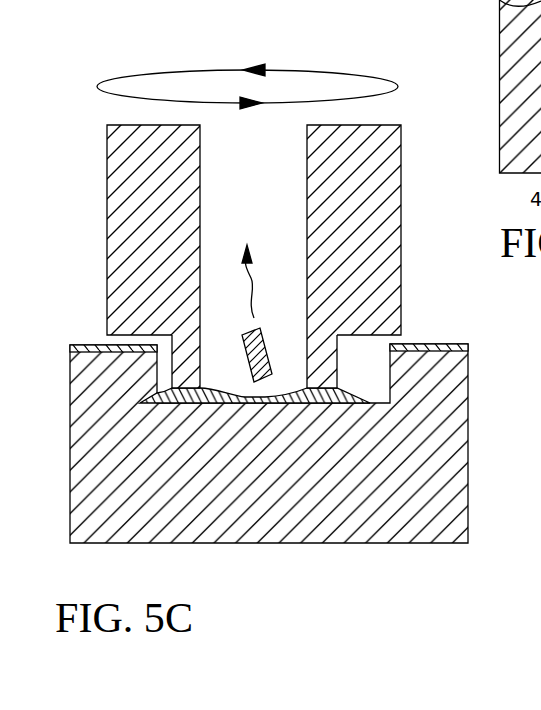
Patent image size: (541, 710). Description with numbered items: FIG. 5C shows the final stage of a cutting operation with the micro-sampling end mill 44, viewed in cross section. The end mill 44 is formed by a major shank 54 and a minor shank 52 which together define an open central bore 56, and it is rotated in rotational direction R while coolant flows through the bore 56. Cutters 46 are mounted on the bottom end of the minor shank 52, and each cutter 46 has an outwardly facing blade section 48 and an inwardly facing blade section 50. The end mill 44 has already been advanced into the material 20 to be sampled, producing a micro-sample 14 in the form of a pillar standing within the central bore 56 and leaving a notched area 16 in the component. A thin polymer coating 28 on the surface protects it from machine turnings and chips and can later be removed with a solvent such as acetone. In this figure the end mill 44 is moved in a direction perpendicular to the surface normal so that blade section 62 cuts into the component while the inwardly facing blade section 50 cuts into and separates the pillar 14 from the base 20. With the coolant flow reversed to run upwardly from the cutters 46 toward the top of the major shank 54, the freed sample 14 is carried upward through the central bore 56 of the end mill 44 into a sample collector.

The micro-sample 14 is at (271, 330).
The notched area 16 is at (383, 390).
The material to be sampled 20 is at (267, 342).
The thin polymer coating 28 is at (248, 342).
The micro-sampling end mill 44 is at (107, 197).
The cutters 46 is at (178, 403).
The outwardly facing blade section 48 is at (158, 400).
The inwardly facing blade section 50 is at (216, 393).
The minor shank 52 is at (307, 222).
The major shank 54 is at (401, 197).
The central bore 56 is at (262, 166).
The blade section 62 is at (128, 404).
The rotational direction R is at (294, 70).